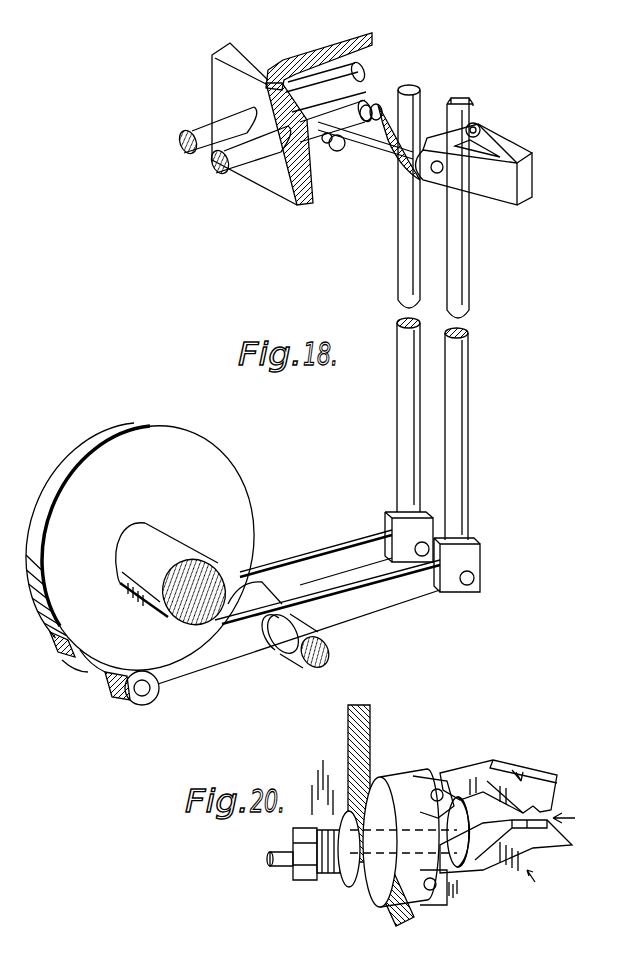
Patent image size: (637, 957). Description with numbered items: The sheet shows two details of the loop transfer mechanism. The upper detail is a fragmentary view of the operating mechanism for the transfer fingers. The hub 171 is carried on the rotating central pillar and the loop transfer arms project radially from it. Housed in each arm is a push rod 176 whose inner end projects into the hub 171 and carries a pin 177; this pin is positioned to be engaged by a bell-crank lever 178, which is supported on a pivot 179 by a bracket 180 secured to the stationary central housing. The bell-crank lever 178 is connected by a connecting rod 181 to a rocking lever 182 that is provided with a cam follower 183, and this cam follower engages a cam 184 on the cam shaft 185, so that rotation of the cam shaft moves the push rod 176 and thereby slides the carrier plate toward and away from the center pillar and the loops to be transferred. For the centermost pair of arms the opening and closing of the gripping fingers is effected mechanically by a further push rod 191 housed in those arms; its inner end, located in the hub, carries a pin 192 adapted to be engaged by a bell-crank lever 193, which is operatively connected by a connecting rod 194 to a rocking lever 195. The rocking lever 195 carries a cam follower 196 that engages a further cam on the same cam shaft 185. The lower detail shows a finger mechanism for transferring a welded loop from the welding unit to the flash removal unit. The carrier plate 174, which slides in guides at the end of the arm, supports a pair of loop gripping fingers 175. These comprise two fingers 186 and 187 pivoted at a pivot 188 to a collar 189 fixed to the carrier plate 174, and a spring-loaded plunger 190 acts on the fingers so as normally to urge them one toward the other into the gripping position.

In FIG. 18, the hub 171 is at (232, 52).
In FIG. 18, the pin 192 is at (332, 74).
In FIG. 18, the push rod 191 is at (206, 130).
In FIG. 18, the push rod 176 is at (234, 174).
In FIG. 18, the bell-crank lever 193 is at (337, 151).
In FIG. 18, the bell-crank lever 178 is at (395, 160).
In FIG. 18, the pin 177 is at (372, 112).
In FIG. 18, the bracket 180 is at (531, 182).
In FIG. 18, the pivot 179 is at (443, 167).
In FIG. 18, the connecting rod 194 is at (400, 256).
In FIG. 18, the connecting rod 181 is at (469, 390).
In FIG. 18, the rocking lever 195 is at (346, 556).
In FIG. 18, the rocking lever 182 is at (386, 605).
In FIG. 18, the cam 184 is at (92, 476).
In FIG. 18, the cam shaft 185 is at (178, 538).
In FIG. 18, the cam follower 196 is at (58, 653).
In FIG. 18, the cam follower 183 is at (136, 705).
In FIG. 20, the carrier plate 174 is at (350, 748).
In FIG. 20, the loop gripping fingers 175 is at (560, 814).
In FIG. 20, the collar 189 is at (388, 775).
In FIG. 20, the pivot 188 is at (437, 788).
In FIG. 20, the spring-loaded plunger 190 is at (482, 778).
In FIG. 20, the finger 186 is at (535, 780).
In FIG. 20, the finger 187 is at (497, 880).